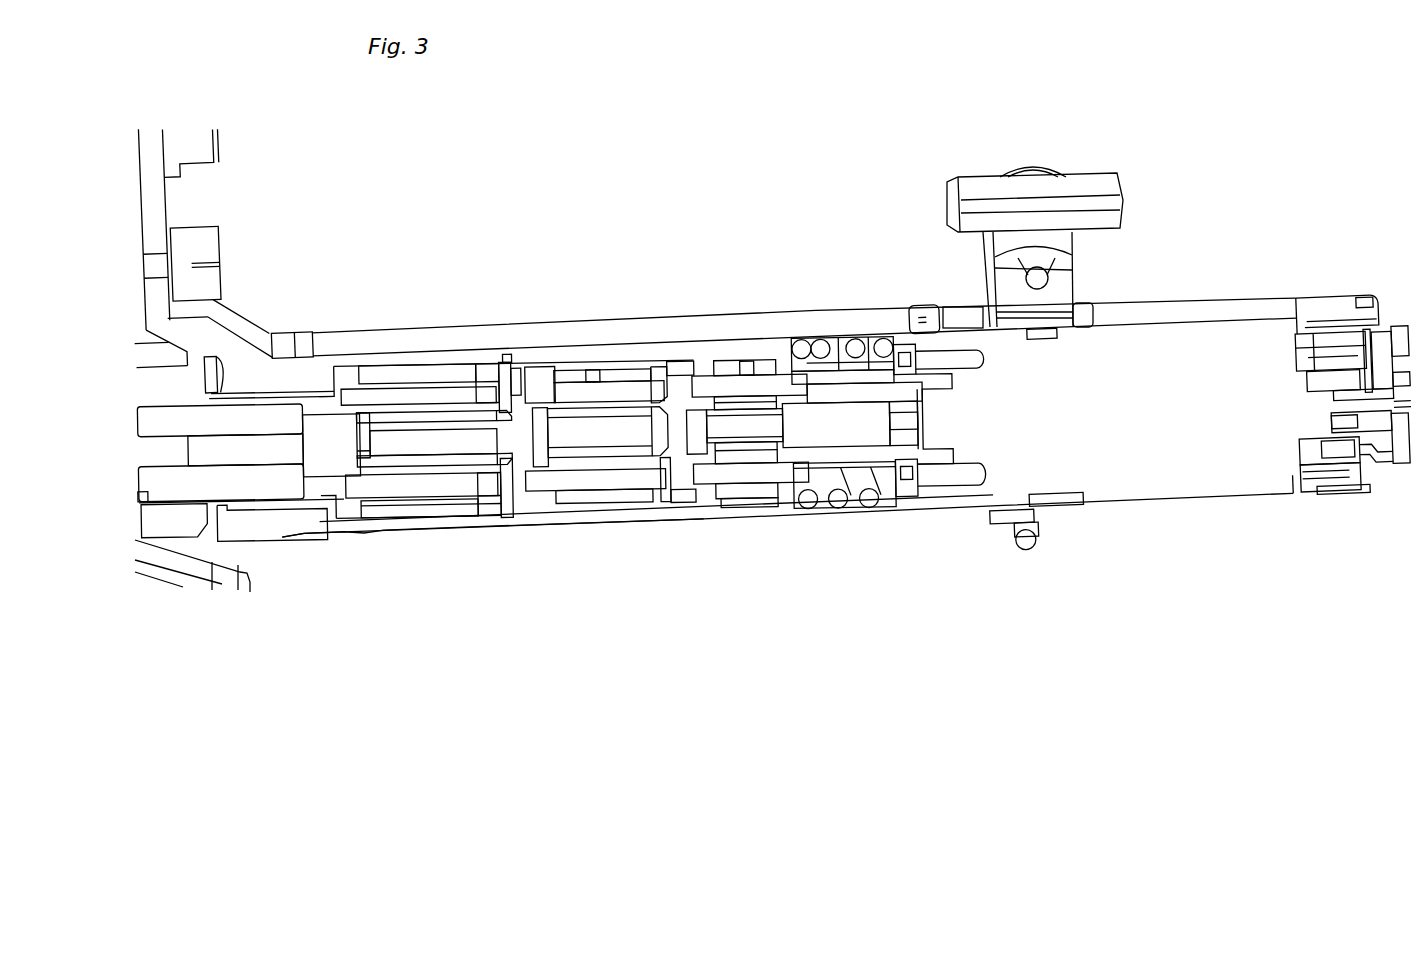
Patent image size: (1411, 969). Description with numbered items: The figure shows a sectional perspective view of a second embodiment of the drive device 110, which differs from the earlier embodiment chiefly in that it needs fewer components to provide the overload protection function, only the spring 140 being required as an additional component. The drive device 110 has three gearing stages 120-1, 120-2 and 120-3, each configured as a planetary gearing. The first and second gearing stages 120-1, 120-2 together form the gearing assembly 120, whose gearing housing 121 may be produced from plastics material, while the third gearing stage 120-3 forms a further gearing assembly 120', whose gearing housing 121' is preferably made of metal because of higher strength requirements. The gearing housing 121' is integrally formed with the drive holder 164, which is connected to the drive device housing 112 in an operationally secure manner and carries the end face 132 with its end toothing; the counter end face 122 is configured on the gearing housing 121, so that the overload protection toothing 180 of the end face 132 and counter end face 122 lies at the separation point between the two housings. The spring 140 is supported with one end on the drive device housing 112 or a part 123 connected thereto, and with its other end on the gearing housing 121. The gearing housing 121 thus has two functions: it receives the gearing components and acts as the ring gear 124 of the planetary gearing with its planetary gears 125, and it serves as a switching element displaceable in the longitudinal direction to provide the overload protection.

The drive device 110 is at (682, 185).
The drive device housing 112 is at (350, 350).
The gearing assembly 120 is at (842, 372).
The further gearing assembly 120' is at (383, 593).
The first gearing stage 120-1 is at (727, 530).
The second gearing stage 120-2 is at (550, 527).
The third gearing stage 120-3 is at (388, 373).
The gearing housing 121 is at (594, 560).
The gearing housing 121' is at (248, 498).
The counter end face 122 is at (530, 362).
The part 123 is at (907, 343).
The ring gear 124 is at (728, 352).
The planetary gears 125 is at (595, 372).
The end face 132 is at (505, 352).
The spring 140 is at (835, 500).
The drive holder 164 is at (192, 360).
The overload protection toothing 180 is at (510, 350).